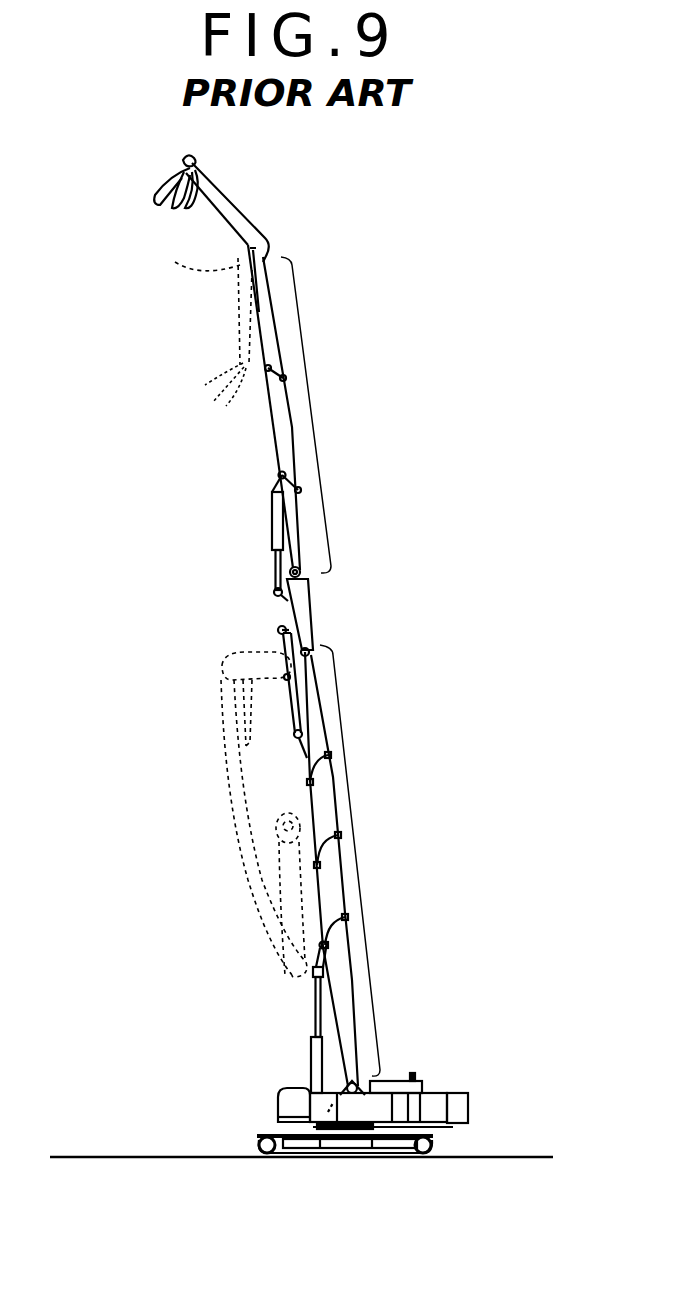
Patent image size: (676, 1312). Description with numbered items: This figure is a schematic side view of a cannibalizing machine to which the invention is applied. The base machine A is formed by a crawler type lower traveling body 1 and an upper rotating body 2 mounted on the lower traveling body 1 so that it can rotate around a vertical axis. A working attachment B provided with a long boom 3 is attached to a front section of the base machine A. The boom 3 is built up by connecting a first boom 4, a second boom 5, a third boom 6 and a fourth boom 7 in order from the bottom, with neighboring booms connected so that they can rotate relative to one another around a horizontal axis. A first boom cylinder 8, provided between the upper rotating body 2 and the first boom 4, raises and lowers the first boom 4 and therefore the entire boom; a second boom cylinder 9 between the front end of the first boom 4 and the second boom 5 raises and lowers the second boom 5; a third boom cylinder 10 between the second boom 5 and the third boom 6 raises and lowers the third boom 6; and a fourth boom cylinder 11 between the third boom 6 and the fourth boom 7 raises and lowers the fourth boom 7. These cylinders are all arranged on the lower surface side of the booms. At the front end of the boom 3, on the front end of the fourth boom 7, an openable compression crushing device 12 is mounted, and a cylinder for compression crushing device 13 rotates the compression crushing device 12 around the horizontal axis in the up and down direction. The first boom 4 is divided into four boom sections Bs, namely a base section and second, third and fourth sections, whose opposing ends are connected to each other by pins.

The lower traveling body 1 is at (360, 1158).
The upper rotating body 2 is at (438, 1093).
The base machine A is at (470, 1110).
The boom 3 is at (346, 565).
The first boom 4 is at (356, 849).
The second boom 5 is at (311, 607).
The third boom 6 is at (316, 404).
The fourth boom 7 is at (240, 242).
The first boom cylinder 8 is at (312, 1062).
The second boom cylinder 9 is at (296, 695).
The third boom cylinder 10 is at (273, 523).
The fourth boom cylinder 11 is at (252, 298).
The compression crushing device 12 is at (157, 181).
The cylinder for compression crushing device 13 is at (215, 188).
The working attachment B is at (160, 440).
The boom sections Bs is at (330, 735).